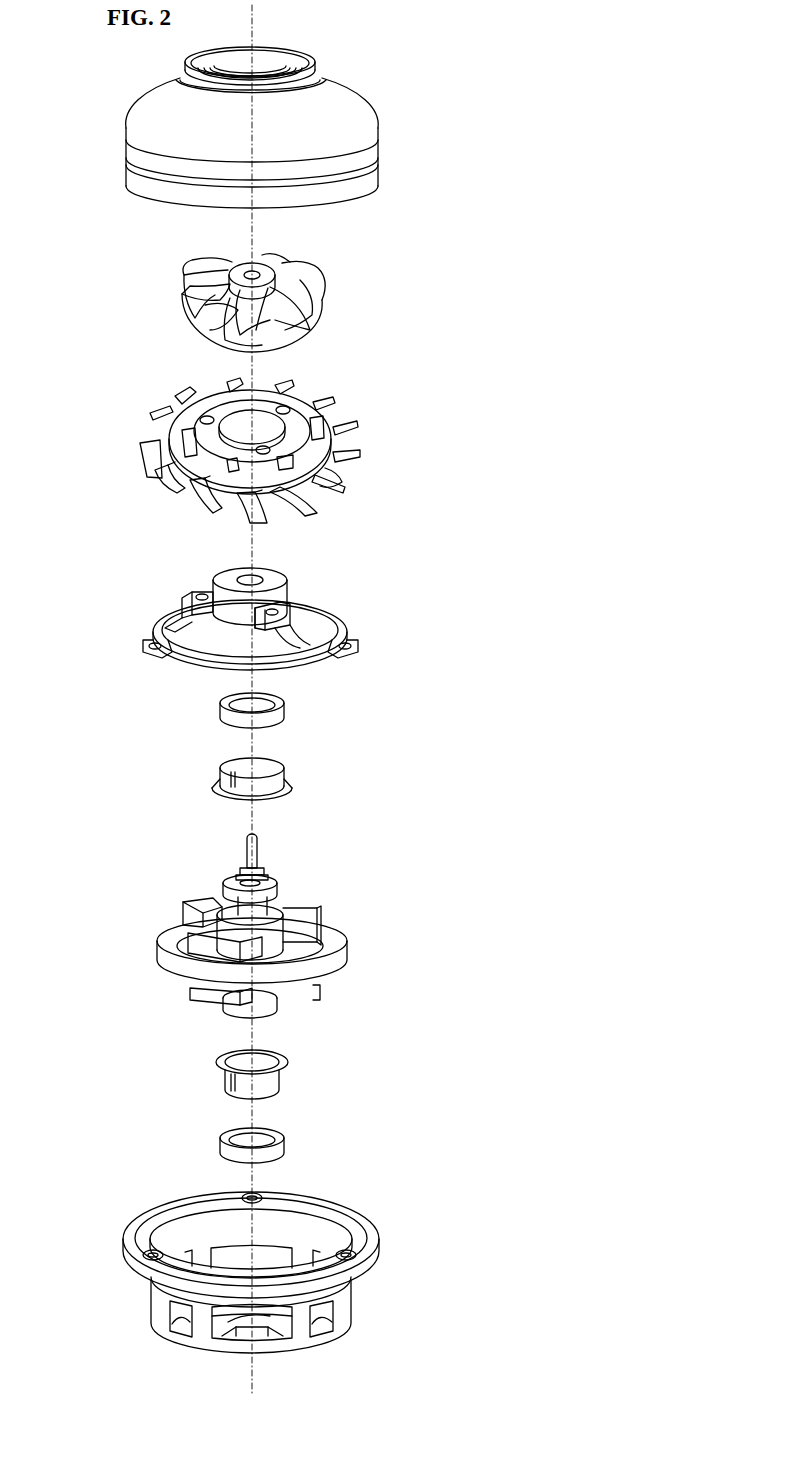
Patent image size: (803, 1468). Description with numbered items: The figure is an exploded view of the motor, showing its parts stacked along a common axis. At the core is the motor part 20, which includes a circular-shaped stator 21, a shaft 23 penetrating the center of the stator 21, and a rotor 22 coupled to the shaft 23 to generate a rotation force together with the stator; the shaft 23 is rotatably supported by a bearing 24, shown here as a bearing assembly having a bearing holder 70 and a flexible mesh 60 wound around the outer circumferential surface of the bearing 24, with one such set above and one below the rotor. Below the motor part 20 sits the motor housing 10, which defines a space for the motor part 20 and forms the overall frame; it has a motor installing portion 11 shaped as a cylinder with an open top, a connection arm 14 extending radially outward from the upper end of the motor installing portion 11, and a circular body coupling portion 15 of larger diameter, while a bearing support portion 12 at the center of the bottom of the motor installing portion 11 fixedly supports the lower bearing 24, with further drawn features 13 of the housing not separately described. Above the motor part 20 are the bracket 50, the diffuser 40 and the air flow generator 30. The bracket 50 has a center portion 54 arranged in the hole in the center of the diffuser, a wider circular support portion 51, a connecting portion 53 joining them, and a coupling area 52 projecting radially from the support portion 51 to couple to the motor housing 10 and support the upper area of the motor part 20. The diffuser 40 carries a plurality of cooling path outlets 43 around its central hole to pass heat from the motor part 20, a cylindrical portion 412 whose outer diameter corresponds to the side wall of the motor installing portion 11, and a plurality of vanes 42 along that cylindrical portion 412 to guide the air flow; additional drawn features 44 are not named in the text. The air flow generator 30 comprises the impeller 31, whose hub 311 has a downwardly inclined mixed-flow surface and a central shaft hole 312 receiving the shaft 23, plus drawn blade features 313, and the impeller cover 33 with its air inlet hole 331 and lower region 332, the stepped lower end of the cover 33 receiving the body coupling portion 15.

The motor housing 10 is at (427, 1297).
The motor installing portion 11 is at (298, 1218).
The bearing support portion 12 is at (273, 1316).
The rib of base 13 is at (247, 1317).
The connection arm 14 is at (160, 1254).
The body coupling portion 15 is at (368, 1255).
The motor part 20 is at (424, 860).
The stator 21 is at (335, 965).
The rotor 22 is at (278, 935).
The shaft 23 is at (258, 852).
The bearing 24 is at (232, 890).
The air flow generator 30 is at (50, 48).
The impeller 31 is at (406, 310).
The hub 311 is at (283, 330).
The shaft hole 312 is at (276, 270).
The impeller blade 313 is at (184, 298).
The impeller cover 33 is at (406, 104).
The air inlet hole 331 is at (292, 66).
The cover skirt 332 is at (372, 175).
The diffuser 40 is at (405, 449).
The cylindrical portion 412 is at (312, 486).
The vanes 42 is at (342, 487).
The cooling path outlets 43 is at (180, 493).
The diffuser plate 44 is at (238, 428).
The bracket 50 is at (406, 595).
The support portion 51 is at (348, 625).
The coupling area 52 is at (142, 645).
The connecting portion 53 is at (155, 627).
The center portion 54 is at (282, 578).
The flexible mesh 60 is at (345, 714).
The bearing holder 70 is at (345, 798).